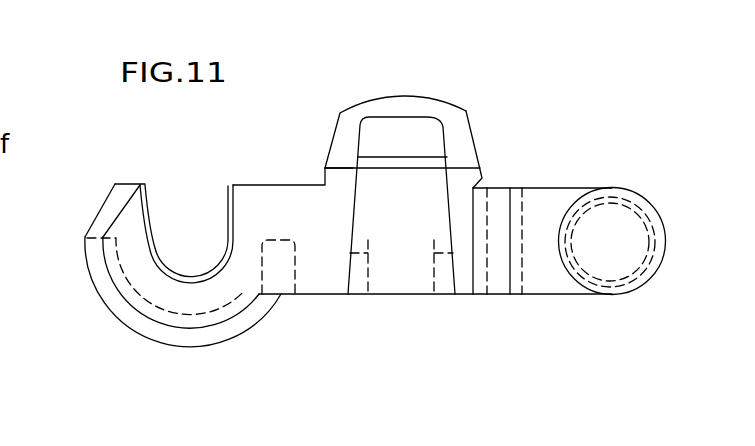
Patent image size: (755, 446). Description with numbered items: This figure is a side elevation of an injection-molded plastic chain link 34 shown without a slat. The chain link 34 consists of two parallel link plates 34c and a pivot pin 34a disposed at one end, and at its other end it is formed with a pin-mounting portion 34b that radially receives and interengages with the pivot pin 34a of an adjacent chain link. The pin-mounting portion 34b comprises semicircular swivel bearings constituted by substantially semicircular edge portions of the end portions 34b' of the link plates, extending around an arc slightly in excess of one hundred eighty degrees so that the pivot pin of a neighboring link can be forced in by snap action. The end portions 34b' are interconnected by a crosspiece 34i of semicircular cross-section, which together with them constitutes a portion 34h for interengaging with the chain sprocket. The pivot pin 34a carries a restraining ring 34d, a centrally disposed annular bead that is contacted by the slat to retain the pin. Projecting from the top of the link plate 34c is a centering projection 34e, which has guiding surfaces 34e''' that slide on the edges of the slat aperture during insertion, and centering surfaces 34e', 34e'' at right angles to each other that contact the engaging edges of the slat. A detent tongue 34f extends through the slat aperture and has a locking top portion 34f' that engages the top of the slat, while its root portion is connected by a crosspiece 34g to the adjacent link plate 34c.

The chain link 34 is at (552, 309).
The pivot pin 34a is at (623, 230).
The pin-mounting portion 34b is at (139, 206).
The end portion of the link plate 34b' is at (146, 265).
The link plate 34c is at (319, 232).
The restraining ring 34d is at (643, 282).
The centering projection 34e is at (395, 93).
The centering surface 34e' is at (474, 148).
The centering surface 34e'' is at (558, 224).
The guiding surface 34e''' is at (551, 133).
The detent tongue 34f is at (436, 169).
The locking top portion 34f' is at (370, 108).
The crosspiece 34g is at (442, 280).
The portion for interengaging with the chain sprocket 34h is at (148, 328).
The crosspiece 34i is at (272, 258).